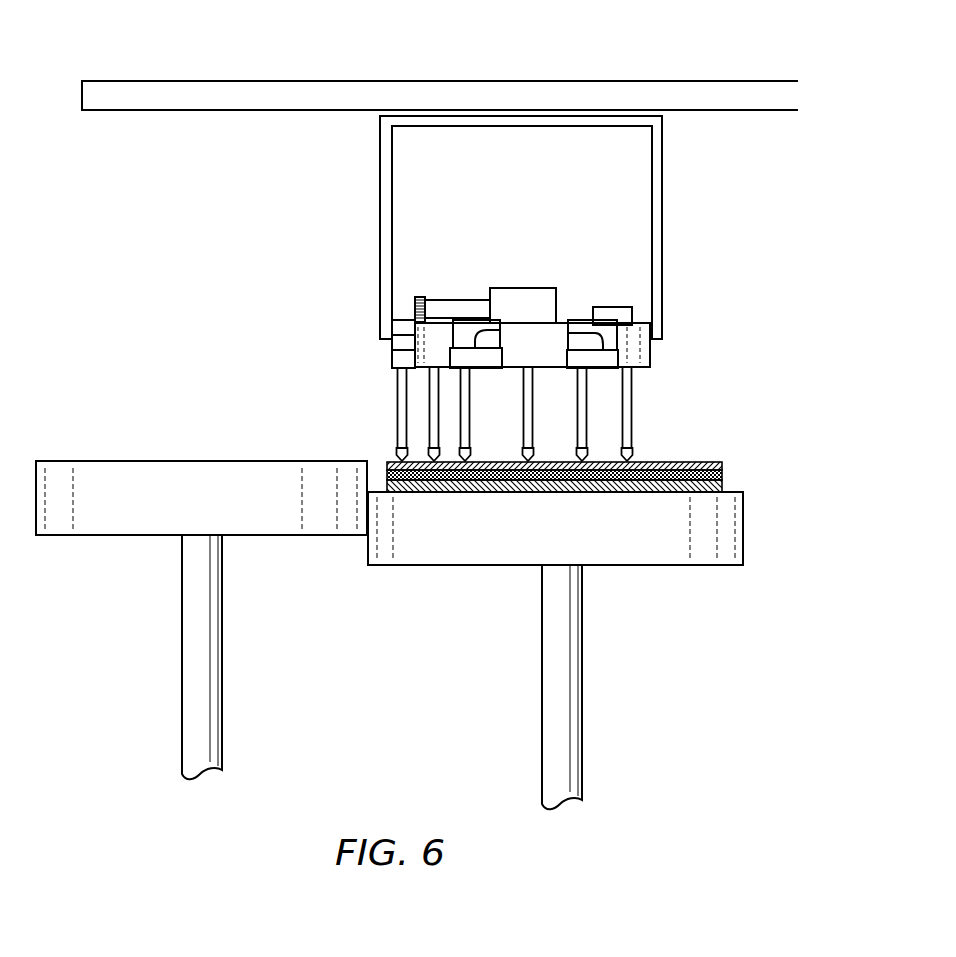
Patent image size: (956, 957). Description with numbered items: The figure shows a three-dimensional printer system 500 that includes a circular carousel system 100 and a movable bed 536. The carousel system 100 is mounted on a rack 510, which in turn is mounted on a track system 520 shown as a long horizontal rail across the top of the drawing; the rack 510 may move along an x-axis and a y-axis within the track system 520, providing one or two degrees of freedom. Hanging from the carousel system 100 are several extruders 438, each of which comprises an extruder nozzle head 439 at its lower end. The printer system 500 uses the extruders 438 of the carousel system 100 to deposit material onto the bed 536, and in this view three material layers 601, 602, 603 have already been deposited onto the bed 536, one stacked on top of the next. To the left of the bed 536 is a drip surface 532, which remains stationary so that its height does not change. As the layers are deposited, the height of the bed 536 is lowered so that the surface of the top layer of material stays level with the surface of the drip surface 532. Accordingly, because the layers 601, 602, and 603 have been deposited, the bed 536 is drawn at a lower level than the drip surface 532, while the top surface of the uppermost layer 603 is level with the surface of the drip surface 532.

The carousel system 100 is at (526, 250).
The extruder 438 is at (398, 379).
The extruder nozzle head 439 is at (397, 452).
The 3D printer system 500 is at (389, 635).
The rack 510 is at (662, 238).
The track system 520 is at (283, 92).
The drip surface 532 is at (222, 508).
The bed 536 is at (578, 538).
The material layer 601 is at (722, 487).
The material layer 602 is at (722, 476).
The material layer 603 is at (722, 466).